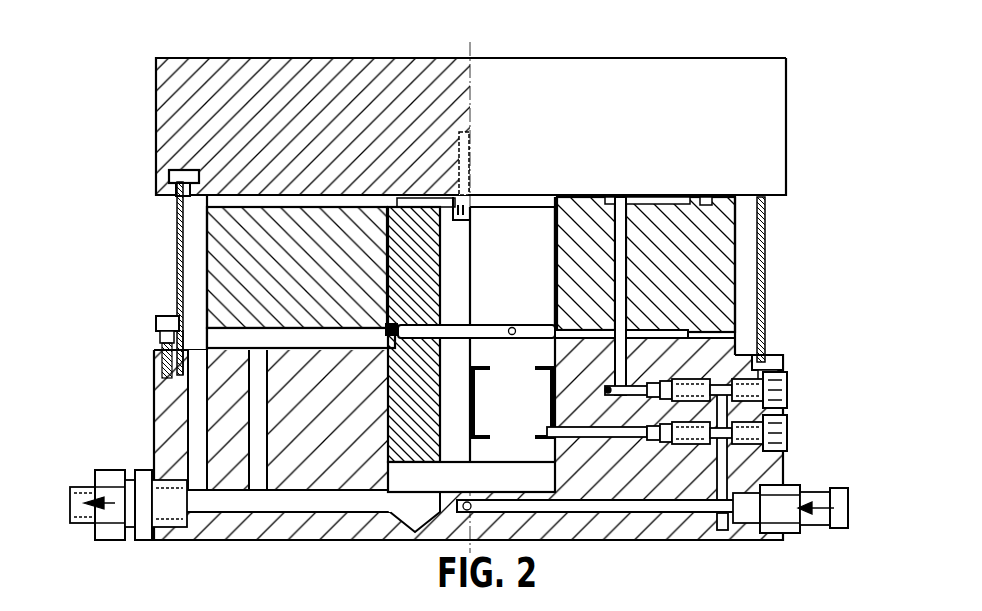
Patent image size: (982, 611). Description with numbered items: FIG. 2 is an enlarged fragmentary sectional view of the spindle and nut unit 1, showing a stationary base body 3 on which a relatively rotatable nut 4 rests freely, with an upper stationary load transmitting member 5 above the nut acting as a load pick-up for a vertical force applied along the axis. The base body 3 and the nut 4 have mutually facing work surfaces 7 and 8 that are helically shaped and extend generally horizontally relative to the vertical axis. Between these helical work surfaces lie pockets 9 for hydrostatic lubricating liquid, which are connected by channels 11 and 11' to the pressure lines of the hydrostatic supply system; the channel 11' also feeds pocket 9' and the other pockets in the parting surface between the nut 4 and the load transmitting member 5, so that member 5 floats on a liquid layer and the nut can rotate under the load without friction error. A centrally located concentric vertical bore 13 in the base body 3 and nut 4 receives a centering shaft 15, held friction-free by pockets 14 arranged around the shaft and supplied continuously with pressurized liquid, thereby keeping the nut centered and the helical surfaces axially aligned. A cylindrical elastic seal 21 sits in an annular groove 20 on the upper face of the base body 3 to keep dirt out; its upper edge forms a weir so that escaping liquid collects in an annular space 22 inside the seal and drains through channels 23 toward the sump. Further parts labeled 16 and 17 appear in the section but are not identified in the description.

The injection molding unit 1 is at (356, 49).
The base body 3 is at (349, 540).
The nut 4 is at (724, 262).
The load transmitting member 5 is at (757, 79).
The work surface 7 is at (712, 338).
The work surface 8 is at (670, 330).
The pockets 9 is at (626, 338).
The pocket 9' is at (649, 271).
The channel 11 is at (459, 458).
The channel 11' is at (649, 238).
The vertical bore 13 is at (558, 458).
The pockets 14 is at (484, 427).
The centering shaft 15 is at (526, 370).
The retaining bracket 16 is at (528, 194).
The nut 17 is at (213, 182).
The annular groove 20 is at (172, 373).
The cylindrical seal 21 is at (178, 241).
The annular space 22 is at (195, 337).
The channels 23 is at (200, 467).